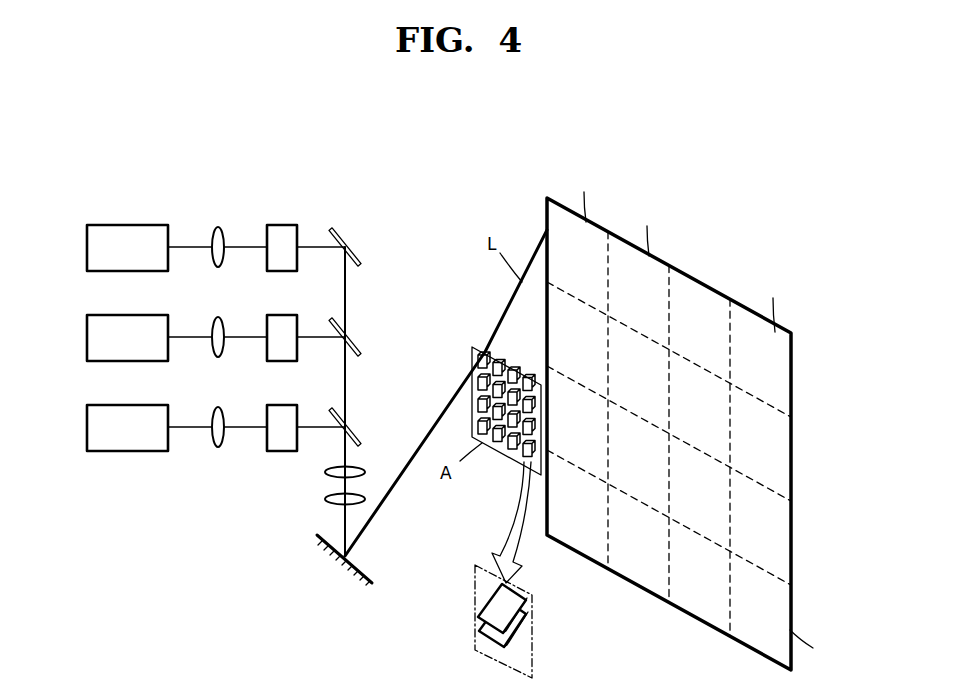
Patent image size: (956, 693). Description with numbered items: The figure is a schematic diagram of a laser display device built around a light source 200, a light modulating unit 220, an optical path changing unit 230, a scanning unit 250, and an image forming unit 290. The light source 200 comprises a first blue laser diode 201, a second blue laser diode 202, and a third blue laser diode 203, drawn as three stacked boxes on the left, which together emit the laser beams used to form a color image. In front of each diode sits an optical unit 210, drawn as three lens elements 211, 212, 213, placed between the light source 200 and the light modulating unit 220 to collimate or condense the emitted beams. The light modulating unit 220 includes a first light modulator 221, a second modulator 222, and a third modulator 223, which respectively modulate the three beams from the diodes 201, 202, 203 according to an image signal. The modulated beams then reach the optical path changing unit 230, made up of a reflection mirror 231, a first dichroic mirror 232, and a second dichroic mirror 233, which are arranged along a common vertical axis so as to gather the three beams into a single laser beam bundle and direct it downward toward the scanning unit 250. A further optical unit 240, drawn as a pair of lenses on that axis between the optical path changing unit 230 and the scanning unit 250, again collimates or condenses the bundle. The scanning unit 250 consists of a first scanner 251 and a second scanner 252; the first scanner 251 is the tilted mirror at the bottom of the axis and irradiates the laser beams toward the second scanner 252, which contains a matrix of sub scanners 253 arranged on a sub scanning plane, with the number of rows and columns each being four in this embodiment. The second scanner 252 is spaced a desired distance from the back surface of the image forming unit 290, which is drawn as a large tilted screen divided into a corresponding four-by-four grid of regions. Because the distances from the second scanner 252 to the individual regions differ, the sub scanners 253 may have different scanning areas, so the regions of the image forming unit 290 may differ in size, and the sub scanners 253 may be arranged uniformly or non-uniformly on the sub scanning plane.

The light source 200 is at (67, 160).
The first blue laser diode 201 is at (87, 228).
The second blue laser diode 202 is at (87, 318).
The third blue laser diode 203 is at (87, 408).
The optical unit 210 is at (198, 168).
The first collimating lens 211 is at (213, 236).
The second collimating lens 212 is at (213, 326).
The third collimating lens 213 is at (213, 416).
The light modulating unit 220 is at (273, 168).
The first light modulator 221 is at (267, 231).
The second modulator 222 is at (267, 321).
The third modulator 223 is at (267, 411).
The optical path changing unit 230 is at (378, 168).
The reflection mirror 231 is at (350, 243).
The first dichroic mirror 232 is at (350, 333).
The second dichroic mirror 233 is at (350, 423).
The optical unit 240 is at (325, 499).
The scanning unit 250 is at (458, 565).
The first scanner 251 is at (368, 569).
The second scanner 252 is at (513, 462).
The sub scanners 253 is at (480, 356).
The image forming unit 290 is at (592, 562).